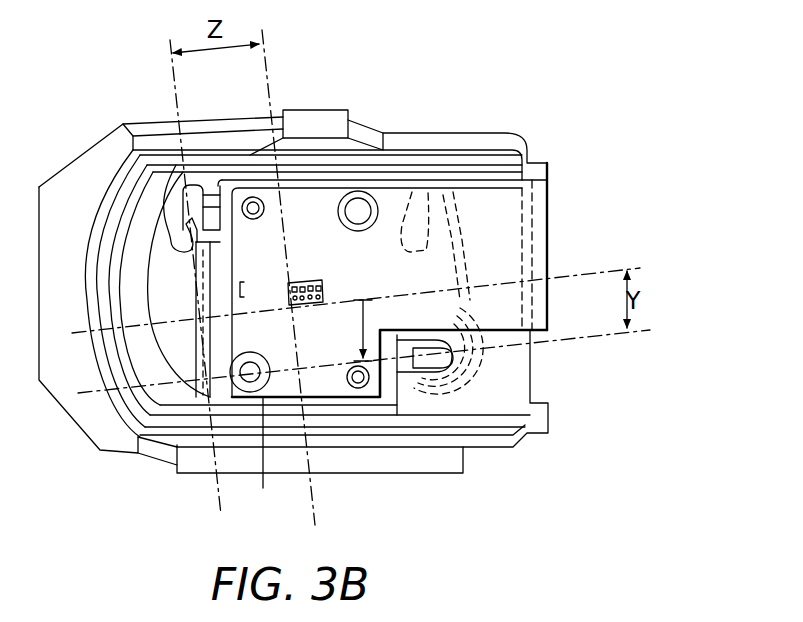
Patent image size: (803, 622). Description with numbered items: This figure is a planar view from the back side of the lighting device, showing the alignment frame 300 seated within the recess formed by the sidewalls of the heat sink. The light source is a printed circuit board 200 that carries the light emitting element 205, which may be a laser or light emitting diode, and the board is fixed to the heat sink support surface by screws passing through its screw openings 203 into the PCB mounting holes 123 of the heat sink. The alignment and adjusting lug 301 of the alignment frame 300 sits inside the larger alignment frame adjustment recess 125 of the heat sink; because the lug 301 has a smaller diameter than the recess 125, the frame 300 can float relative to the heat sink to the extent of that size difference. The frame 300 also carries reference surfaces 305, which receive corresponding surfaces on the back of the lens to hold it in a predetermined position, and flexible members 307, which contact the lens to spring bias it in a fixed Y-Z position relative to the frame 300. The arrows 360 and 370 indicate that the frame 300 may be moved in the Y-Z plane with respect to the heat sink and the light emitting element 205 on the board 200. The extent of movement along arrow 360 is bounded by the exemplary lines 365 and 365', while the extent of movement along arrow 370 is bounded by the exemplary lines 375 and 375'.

The alignment frame 300 is at (495, 140).
The printed circuit board 200 is at (361, 286).
The screw openings 203 is at (377, 200).
The PCB mounting holes 123 is at (358, 210).
The alignment and adjusting lug 301 is at (248, 376).
The alignment frame adjustment recess 125 is at (262, 456).
The light emitting element 205 is at (310, 281).
The arrow 360 is at (253, 281).
The reference surfaces 305 is at (290, 273).
The flexible members 307 is at (168, 195).
The arrow 370 is at (368, 323).
The exemplary line 365 is at (153, 266).
The exemplary line 365' is at (305, 272).
The exemplary line 375 is at (373, 268).
The exemplary line 375' is at (367, 363).